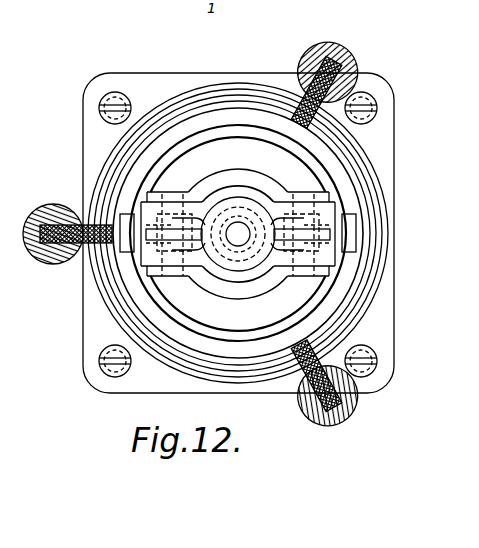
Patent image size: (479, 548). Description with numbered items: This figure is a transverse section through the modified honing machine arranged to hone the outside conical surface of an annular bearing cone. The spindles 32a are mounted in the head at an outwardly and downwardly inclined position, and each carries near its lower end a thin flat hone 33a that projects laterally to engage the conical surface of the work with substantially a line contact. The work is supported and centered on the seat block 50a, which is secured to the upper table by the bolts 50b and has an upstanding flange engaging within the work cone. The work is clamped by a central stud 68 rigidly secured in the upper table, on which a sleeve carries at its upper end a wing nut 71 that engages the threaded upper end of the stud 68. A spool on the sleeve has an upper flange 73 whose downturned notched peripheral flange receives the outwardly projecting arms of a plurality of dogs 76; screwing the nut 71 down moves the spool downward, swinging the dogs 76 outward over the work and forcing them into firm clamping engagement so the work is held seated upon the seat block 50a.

The spindles 32a is at (371, 443).
The hones 33a is at (291, 63).
The seat block 50a is at (443, 297).
The bolts 50b is at (432, 343).
The central stud 68 is at (238, 234).
The wing nut 71 is at (255, 197).
The upper flange 73 is at (182, 202).
The dogs 76 is at (121, 216).